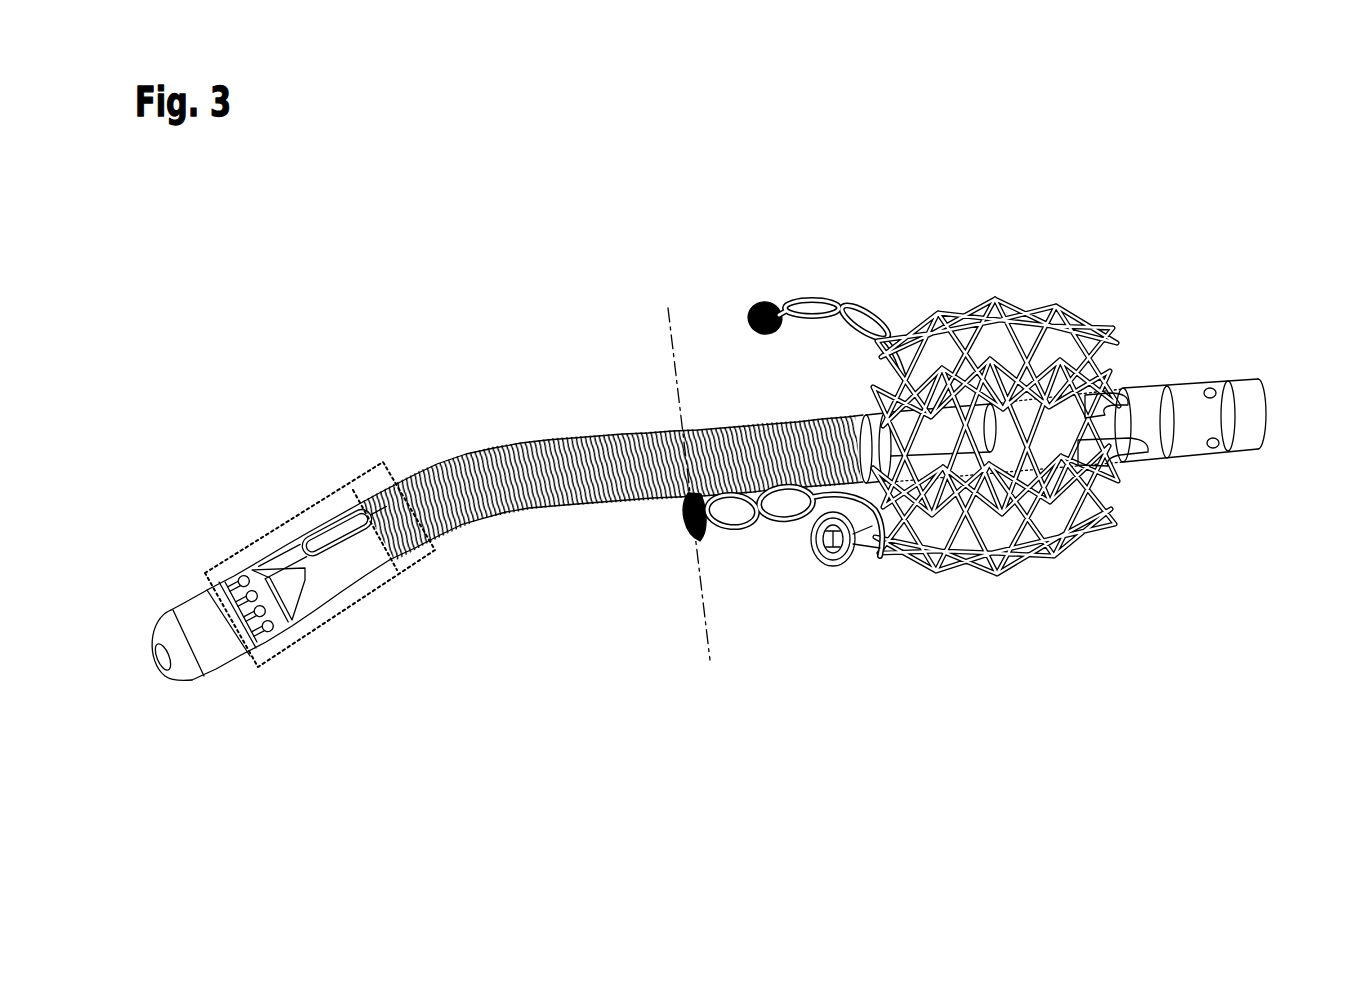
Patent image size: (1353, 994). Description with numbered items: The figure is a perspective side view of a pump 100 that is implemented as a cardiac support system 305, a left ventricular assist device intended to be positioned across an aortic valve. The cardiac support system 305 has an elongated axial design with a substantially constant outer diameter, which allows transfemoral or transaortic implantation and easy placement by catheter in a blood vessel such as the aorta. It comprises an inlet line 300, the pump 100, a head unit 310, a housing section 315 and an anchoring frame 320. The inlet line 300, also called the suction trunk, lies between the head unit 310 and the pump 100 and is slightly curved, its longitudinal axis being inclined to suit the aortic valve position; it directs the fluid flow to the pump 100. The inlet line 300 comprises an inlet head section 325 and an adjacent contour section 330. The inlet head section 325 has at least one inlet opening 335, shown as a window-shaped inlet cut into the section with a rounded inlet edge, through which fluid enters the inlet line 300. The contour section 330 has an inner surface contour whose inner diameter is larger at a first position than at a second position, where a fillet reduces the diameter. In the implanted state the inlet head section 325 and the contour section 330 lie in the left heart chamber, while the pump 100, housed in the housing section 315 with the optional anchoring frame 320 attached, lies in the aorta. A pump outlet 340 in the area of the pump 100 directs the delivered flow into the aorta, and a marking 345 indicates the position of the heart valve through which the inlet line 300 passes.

The cardiac support system 305 is at (444, 299).
The inlet line 300 is at (513, 543).
The marking 345 is at (668, 352).
The contour section 330 is at (375, 460).
The inlet head section 325 is at (256, 532).
The inlet opening 335 is at (326, 558).
The head unit 310 is at (241, 685).
The pump outlet 340 is at (887, 390).
The housing section 315 is at (1131, 380).
The anchoring frame 320 is at (1078, 561).
The pump 100 is at (877, 530).